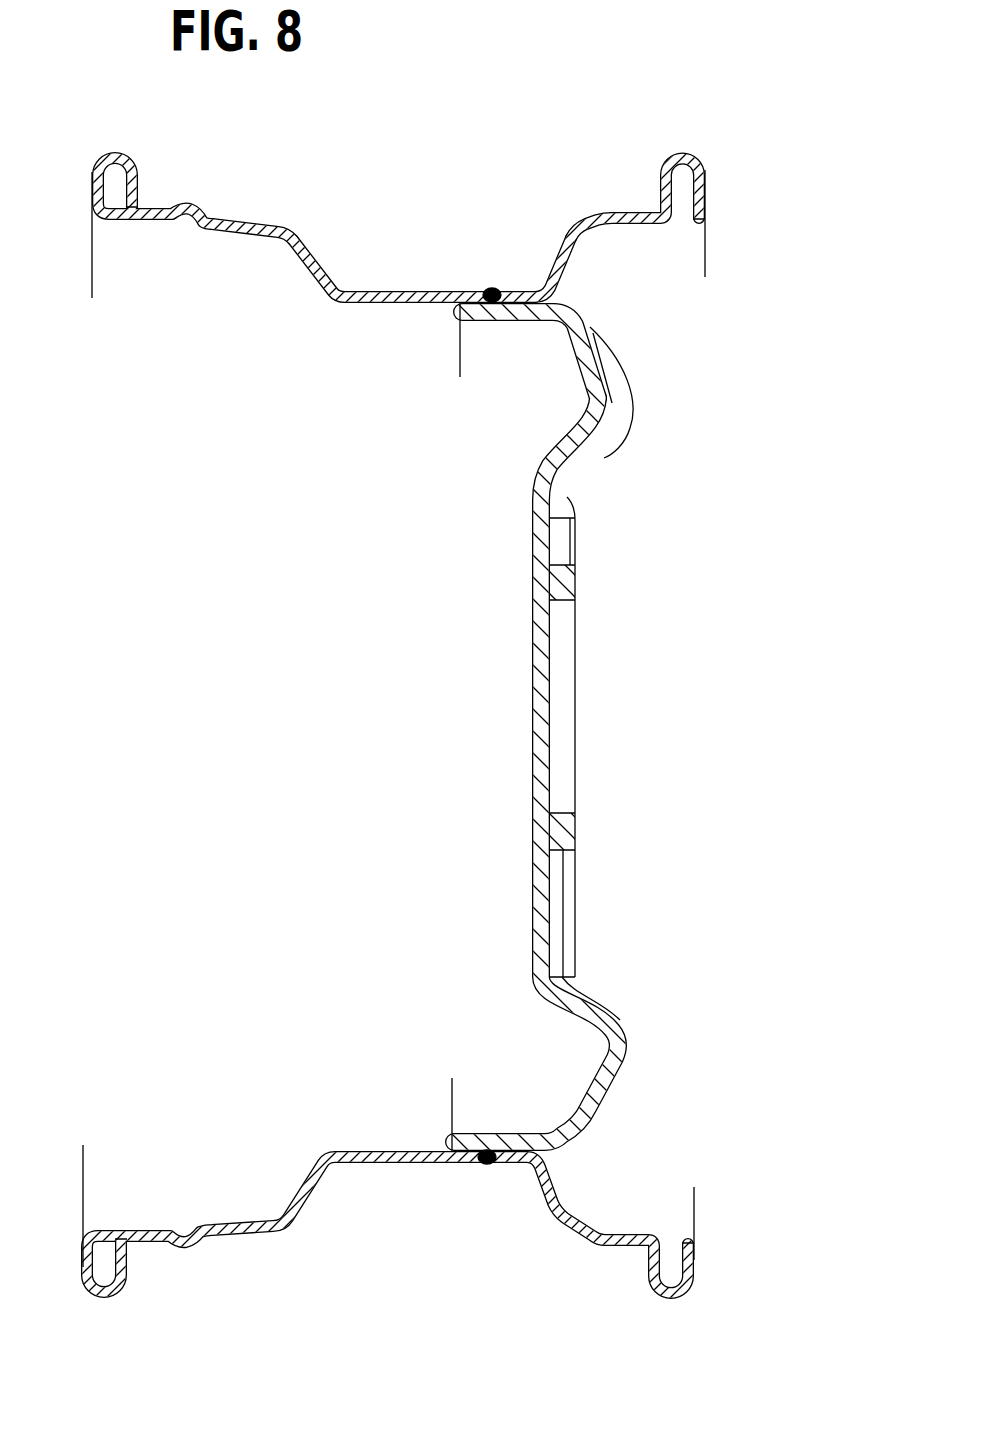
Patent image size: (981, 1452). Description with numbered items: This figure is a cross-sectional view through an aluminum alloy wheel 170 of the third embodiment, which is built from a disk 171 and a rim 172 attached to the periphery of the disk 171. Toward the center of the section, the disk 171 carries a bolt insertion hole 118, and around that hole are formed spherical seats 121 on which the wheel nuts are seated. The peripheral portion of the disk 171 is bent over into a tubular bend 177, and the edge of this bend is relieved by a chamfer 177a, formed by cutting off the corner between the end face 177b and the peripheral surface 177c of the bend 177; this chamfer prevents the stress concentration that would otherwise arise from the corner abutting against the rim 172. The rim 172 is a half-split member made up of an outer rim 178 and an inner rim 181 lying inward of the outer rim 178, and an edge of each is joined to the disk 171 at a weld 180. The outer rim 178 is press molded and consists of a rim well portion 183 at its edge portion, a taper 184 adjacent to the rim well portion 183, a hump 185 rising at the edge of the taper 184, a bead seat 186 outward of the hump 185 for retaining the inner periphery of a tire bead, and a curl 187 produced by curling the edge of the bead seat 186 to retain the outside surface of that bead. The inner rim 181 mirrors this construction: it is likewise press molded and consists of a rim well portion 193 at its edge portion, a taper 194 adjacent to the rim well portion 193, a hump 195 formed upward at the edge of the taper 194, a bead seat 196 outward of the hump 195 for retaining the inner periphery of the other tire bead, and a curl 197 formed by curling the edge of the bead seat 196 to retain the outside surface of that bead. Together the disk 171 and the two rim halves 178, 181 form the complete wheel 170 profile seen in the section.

The wheel 170 is at (207, 597).
The disk 171 is at (662, 425).
The rim 172 is at (713, 157).
The tubular bend 177 is at (497, 323).
The chamfer 177a is at (470, 303).
The end face 177b is at (458, 316).
The peripheral surface 177c is at (543, 268).
The outer rim 178 is at (560, 196).
The weld 180 is at (492, 290).
The inner rim 181 is at (308, 201).
The rim well portion 183 is at (527, 296).
The taper 184 is at (587, 210).
The hump 185 is at (606, 210).
The bead seat 186 is at (640, 209).
The curl 187 is at (684, 154).
The rim well portion 193 is at (398, 290).
The taper 194 is at (250, 209).
The hump 195 is at (183, 208).
The bead seat 196 is at (165, 208).
The curl 197 is at (112, 152).
The bolt insertion hole 118 is at (556, 556).
The spherical seat 121 is at (575, 522).